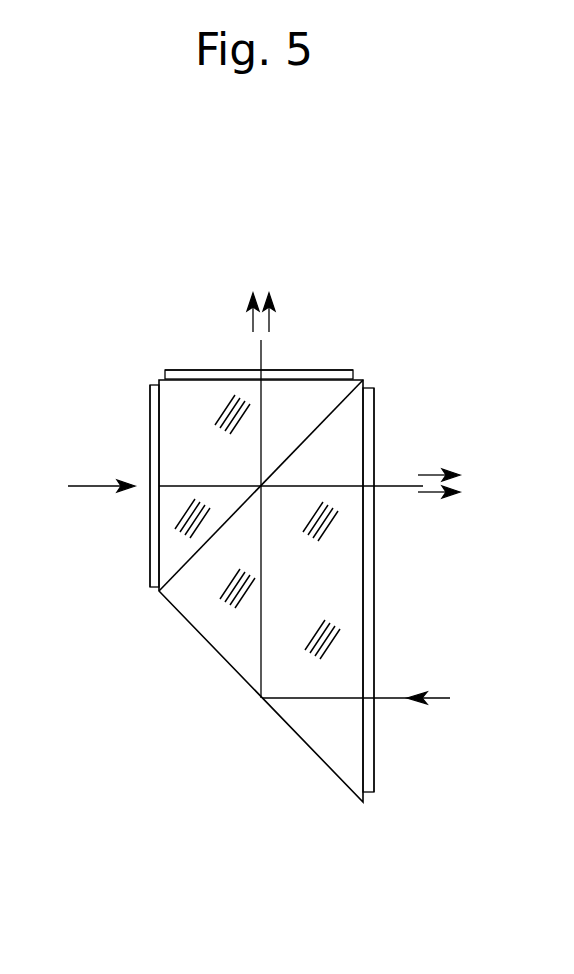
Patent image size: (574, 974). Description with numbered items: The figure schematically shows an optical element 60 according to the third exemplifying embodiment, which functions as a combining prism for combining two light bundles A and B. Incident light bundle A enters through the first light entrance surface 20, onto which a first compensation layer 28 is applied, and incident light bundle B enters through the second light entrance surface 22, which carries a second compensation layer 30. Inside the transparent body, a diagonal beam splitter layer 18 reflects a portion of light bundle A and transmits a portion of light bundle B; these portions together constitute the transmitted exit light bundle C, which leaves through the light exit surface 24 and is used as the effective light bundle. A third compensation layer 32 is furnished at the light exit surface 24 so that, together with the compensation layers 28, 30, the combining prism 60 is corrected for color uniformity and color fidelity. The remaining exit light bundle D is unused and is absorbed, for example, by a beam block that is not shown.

The optical element 60 is at (353, 248).
The beam splitter layer 18 is at (325, 416).
The first light entrance surface 20 is at (152, 578).
The second light entrance surface 22 is at (370, 770).
The light exit surface 24 is at (182, 378).
The first compensation layer 28 is at (150, 522).
The second compensation layer 30 is at (375, 660).
The third compensation layer 32 is at (343, 370).